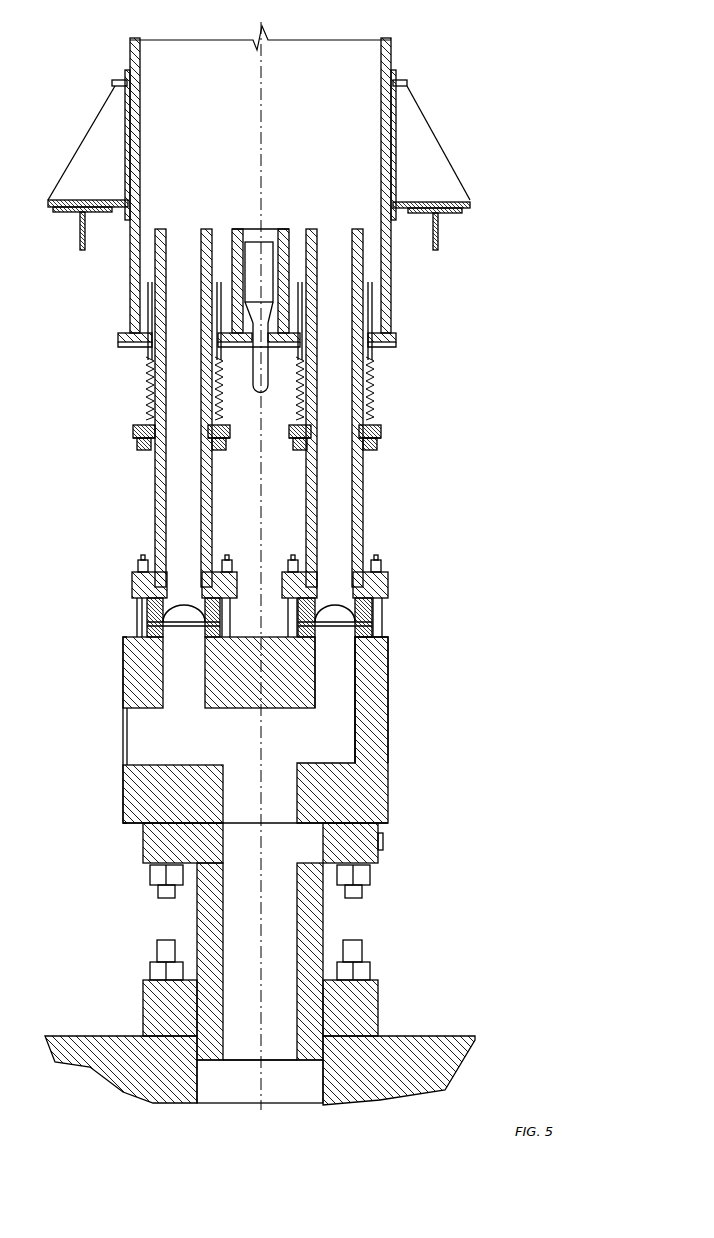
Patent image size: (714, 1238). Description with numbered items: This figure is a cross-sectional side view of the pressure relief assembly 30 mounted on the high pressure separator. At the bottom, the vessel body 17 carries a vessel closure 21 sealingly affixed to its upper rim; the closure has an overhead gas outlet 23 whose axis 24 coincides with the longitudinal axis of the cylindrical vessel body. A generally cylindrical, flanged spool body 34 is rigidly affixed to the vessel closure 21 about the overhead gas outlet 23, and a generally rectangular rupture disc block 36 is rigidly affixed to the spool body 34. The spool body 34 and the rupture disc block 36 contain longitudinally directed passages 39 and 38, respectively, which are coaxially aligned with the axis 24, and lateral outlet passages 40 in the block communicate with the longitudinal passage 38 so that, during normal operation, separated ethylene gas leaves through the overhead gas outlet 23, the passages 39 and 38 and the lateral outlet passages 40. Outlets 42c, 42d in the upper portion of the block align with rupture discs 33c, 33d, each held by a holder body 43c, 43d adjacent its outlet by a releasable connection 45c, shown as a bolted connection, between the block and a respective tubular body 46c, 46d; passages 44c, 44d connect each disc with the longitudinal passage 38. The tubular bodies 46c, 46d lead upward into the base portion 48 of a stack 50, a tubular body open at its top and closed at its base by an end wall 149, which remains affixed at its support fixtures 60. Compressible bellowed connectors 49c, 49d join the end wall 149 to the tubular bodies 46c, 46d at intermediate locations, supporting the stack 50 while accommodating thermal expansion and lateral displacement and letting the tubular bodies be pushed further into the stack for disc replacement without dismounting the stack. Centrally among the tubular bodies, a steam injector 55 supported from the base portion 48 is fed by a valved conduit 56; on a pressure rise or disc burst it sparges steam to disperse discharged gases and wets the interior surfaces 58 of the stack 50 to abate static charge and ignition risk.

The vessel body 17 is at (437, 1040).
The vessel closure 21 is at (380, 1033).
The overhead gas outlet 23 is at (198, 1087).
The axis 24 is at (263, 1090).
The pressure relief assembly 30 is at (428, 433).
The rupture disc 33c is at (335, 603).
The rupture disc 33d is at (187, 603).
The spool body 34 is at (323, 947).
The rupture disc block 36 is at (377, 735).
The longitudinally directed passage 38 is at (388, 820).
The longitudinally directed passage 39 is at (315, 887).
The lateral outlet passage 40 is at (123, 747).
The outlet 42c is at (378, 663).
The outlet 42d is at (125, 685).
The holder body 43c is at (368, 612).
The holder body 43d is at (150, 607).
The passage 44c is at (335, 672).
The passage 44d is at (127, 730).
The releasable connection 45c is at (133, 573).
The tubular body 46c is at (358, 502).
The tubular body 46d is at (153, 493).
The base portion 48 is at (372, 330).
The bellowed connector 49c is at (373, 380).
The bellowed connector 49d is at (150, 385).
The stack 50 is at (391, 140).
The steam injector 55 is at (262, 245).
The valved conduit 56 is at (252, 358).
The interior surface 58 is at (142, 190).
The support fixture 60 is at (420, 202).
The end wall 149 is at (393, 340).